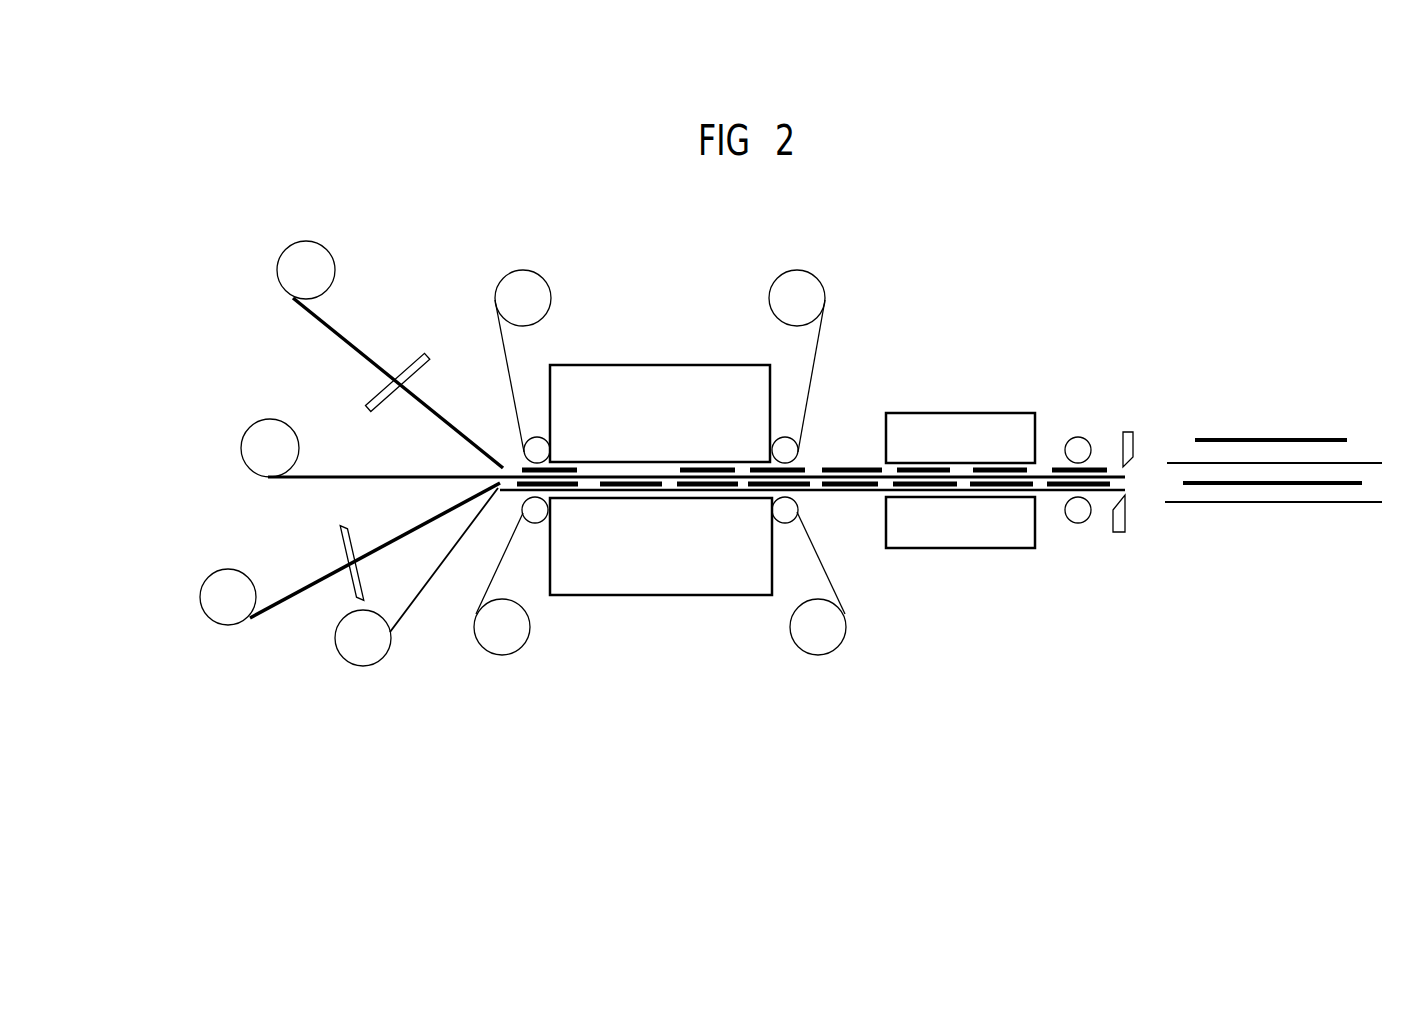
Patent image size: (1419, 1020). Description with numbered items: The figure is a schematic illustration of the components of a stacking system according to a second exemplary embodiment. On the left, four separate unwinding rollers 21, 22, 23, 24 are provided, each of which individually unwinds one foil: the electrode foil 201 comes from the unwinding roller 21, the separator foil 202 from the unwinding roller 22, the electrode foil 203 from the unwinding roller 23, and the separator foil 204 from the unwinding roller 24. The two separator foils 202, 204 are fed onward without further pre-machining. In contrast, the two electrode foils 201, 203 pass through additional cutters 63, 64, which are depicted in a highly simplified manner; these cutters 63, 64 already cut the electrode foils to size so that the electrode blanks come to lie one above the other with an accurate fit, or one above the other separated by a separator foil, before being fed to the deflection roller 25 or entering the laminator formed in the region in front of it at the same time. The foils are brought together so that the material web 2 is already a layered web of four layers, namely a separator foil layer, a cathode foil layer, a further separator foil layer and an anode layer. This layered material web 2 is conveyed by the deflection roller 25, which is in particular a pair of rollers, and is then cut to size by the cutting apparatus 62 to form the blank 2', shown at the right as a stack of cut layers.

The material web 2 is at (812, 415).
The blank 2' is at (1273, 413).
The unwinding roller 21 is at (278, 266).
The unwinding roller 22 is at (241, 448).
The unwinding roller 23 is at (200, 596).
The unwinding roller 24 is at (357, 668).
The deflection roller 25 is at (795, 525).
The cutting apparatus 62 is at (1127, 430).
The cutter 63 is at (418, 358).
The cutter 64 is at (342, 548).
The electrode foil 201 is at (333, 336).
The separator foil 202 is at (330, 481).
The electrode foil 203 is at (285, 604).
The separator foil 204 is at (417, 612).